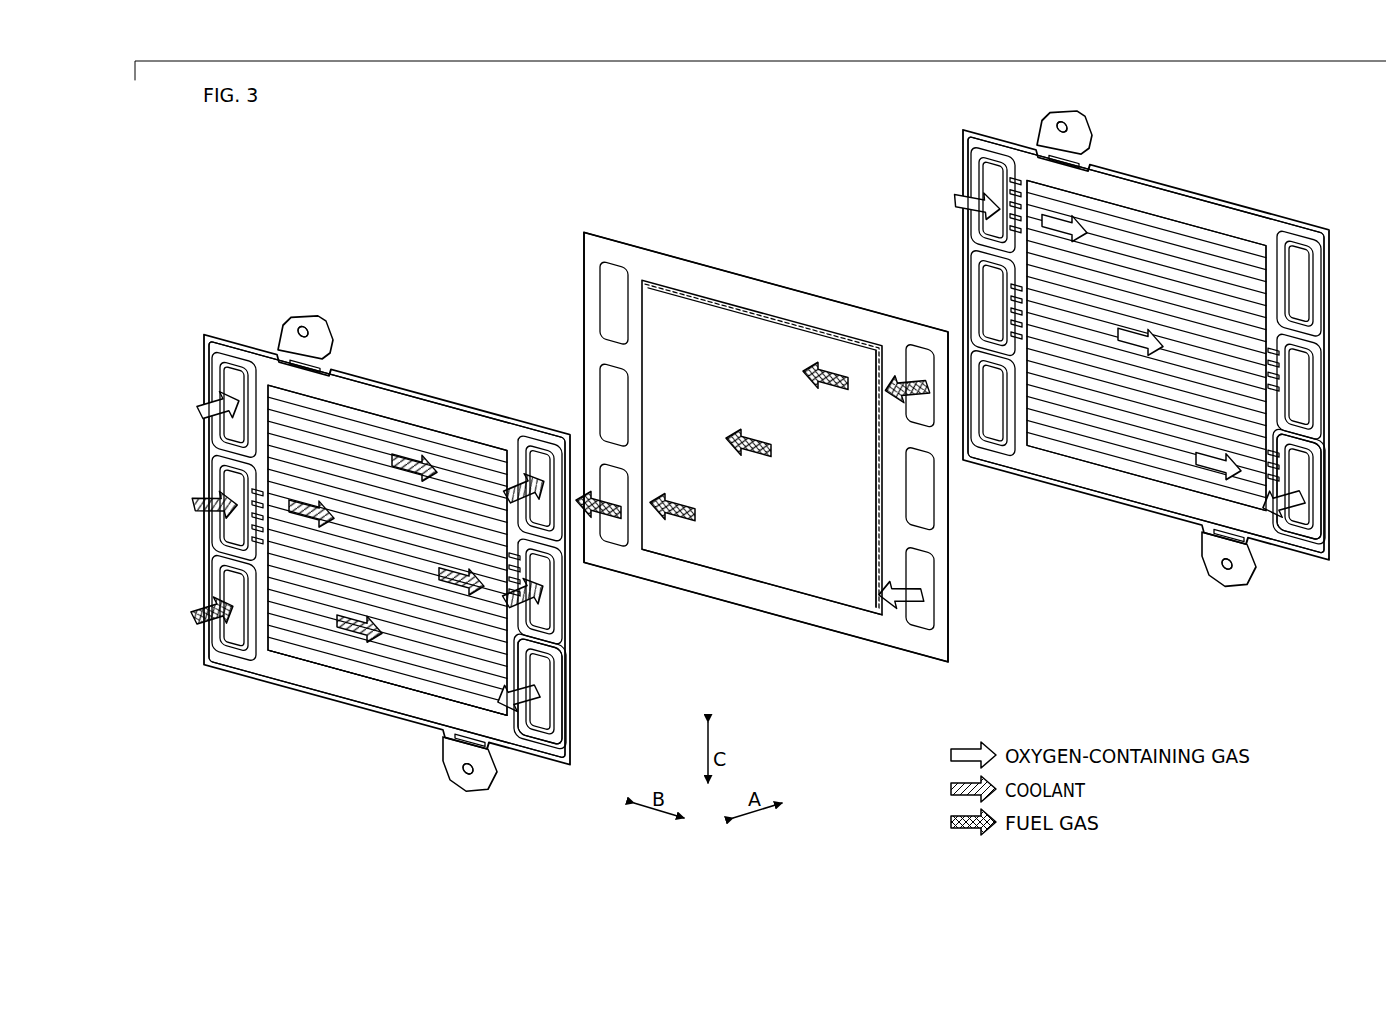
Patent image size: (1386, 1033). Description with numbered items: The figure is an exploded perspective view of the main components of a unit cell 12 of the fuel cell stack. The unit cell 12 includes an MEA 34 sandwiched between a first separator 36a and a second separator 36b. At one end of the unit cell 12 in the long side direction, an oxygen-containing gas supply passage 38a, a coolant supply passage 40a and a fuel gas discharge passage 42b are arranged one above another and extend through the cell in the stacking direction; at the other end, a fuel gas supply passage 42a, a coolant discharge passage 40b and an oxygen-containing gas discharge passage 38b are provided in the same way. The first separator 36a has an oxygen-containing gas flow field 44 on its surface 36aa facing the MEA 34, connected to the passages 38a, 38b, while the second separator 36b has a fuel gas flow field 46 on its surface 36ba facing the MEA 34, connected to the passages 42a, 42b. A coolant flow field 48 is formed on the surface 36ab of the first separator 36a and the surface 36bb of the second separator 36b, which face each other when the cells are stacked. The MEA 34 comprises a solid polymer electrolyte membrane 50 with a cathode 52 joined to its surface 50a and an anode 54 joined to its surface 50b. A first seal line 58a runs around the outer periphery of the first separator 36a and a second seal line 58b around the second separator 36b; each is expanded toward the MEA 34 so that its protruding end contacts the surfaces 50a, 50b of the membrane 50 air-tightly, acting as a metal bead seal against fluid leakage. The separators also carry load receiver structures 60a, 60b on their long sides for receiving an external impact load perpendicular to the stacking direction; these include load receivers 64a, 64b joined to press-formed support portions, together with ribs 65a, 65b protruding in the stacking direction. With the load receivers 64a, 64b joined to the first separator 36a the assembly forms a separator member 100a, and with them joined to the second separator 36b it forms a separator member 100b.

The unit cell 12 is at (893, 133).
The MEA 34 is at (583, 229).
The first separator 36a is at (990, 135).
The second separator 36b is at (203, 346).
The surface of first separator facing the MEA 36aa is at (1312, 433).
The surface of first separator 36ab is at (1312, 447).
The surface of second separator facing the MEA 36ba is at (552, 650).
The surface of second separator 36bb is at (552, 638).
The oxygen-containing gas supply passage 38a is at (232, 382).
The oxygen-containing gas discharge passage 38b is at (543, 710).
The coolant supply passage 40a is at (230, 486).
The coolant discharge passage 40b is at (543, 610).
The fuel gas supply passage 42a is at (538, 458).
The fuel gas discharge passage 42b is at (230, 588).
The oxygen-containing gas flow field 44 is at (1185, 227).
The fuel gas flow field 46 is at (417, 440).
The coolant flow field 48 is at (320, 653).
The solid polymer electrolyte membrane 50 is at (730, 285).
The surface of solid polymer electrolyte membrane 50a is at (903, 630).
The surface of solid polymer electrolyte membrane 50b is at (878, 628).
The cathode 52 is at (785, 313).
The anode 54 is at (685, 308).
The first seal line 58a is at (1242, 220).
The second seal line 58b is at (462, 422).
The load receiver structure 60a is at (313, 328).
The load receiver structure 60b is at (485, 772).
The load receiver 64a is at (736, 286).
The load receiver 64b is at (849, 666).
The rib 65a is at (303, 330).
The rib 65b is at (459, 735).
The separator member 100a is at (958, 130).
The separator member 100b is at (205, 330).